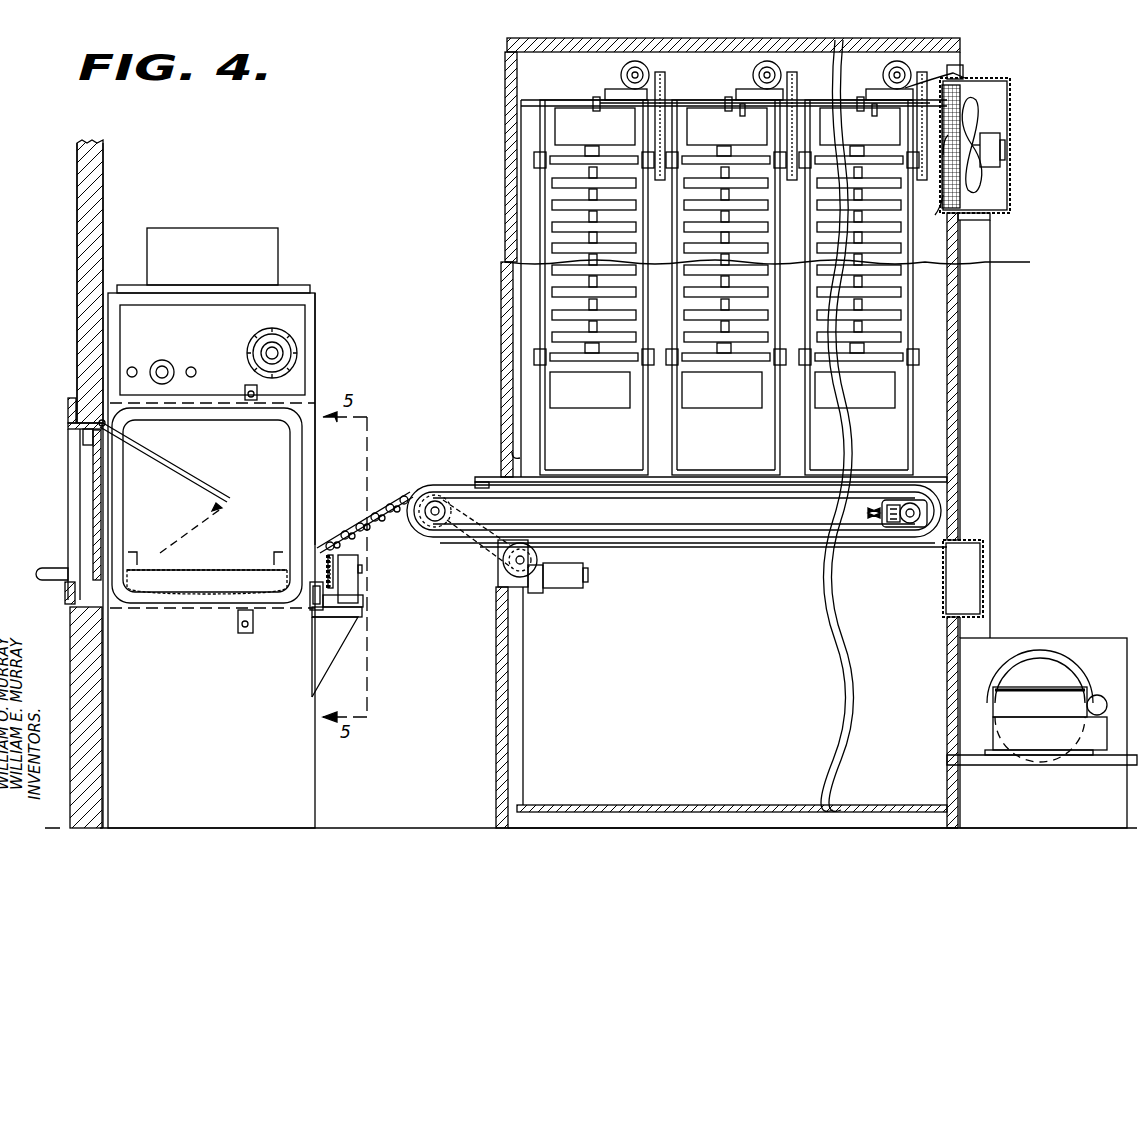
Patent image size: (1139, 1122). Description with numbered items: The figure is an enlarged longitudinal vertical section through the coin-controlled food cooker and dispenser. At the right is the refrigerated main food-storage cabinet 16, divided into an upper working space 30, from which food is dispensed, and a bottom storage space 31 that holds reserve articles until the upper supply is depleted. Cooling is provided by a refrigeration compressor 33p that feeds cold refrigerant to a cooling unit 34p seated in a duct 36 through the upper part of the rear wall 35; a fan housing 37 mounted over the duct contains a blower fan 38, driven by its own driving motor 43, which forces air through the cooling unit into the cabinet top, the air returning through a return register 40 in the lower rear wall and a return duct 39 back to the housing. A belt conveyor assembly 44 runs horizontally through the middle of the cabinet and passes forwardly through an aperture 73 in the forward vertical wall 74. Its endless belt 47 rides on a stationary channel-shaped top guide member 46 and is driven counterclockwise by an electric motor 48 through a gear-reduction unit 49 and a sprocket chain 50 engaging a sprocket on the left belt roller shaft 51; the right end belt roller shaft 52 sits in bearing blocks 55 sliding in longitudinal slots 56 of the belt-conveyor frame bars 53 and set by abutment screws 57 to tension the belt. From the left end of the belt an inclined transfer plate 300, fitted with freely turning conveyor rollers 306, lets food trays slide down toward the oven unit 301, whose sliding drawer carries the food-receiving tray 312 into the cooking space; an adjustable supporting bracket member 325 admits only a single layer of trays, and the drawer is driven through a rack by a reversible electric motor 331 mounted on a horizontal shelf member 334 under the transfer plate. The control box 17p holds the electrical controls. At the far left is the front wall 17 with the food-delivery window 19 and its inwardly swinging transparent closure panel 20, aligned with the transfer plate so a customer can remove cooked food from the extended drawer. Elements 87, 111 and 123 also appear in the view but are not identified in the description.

The main food-storage cabinet 16 is at (922, 44).
The front wall 17 is at (95, 190).
The control box 17p is at (276, 318).
The food-delivery window 19 is at (70, 410).
The transparent closure panel 20 is at (100, 501).
The upper working space 30 is at (568, 86).
The bottom storage space 31 is at (652, 661).
The refrigeration compressor 33p is at (1075, 658).
The cooling unit 34p is at (945, 195).
The rear wall 35 is at (946, 406).
The duct 36 is at (966, 63).
The fan housing 37 is at (998, 220).
The blower fan 38 is at (974, 116).
The return duct 39 is at (990, 400).
The return register 40 is at (953, 613).
The driving motor 43 is at (1000, 166).
The belt conveyor assembly 44 is at (730, 522).
The top guide member 46 is at (654, 478).
The endless belt 47 is at (452, 480).
The electric motor 48 is at (570, 586).
The gear-reduction unit 49 is at (525, 582).
The sprocket chain 50 is at (490, 563).
The belt roller shaft 51 is at (437, 519).
The right end belt roller shaft 52 is at (910, 522).
The belt-conveyor frame bars 53 is at (800, 546).
The bearing blocks 55 is at (908, 495).
The longitudinal slots 56 is at (892, 522).
The abutment screws 57 is at (869, 518).
The aperture 73 is at (514, 455).
The forward vertical wall 74 is at (507, 228).
The sprocket 87 is at (752, 74).
The drive chain 111 is at (793, 183).
The shaft 123 is at (751, 98).
The transfer plate 300 is at (403, 492).
The oven unit 301 is at (250, 528).
The conveyor rollers 306 is at (380, 506).
The food-receiving tray 312 is at (212, 576).
The supporting bracket member 325 is at (171, 553).
The electric motor 331 is at (352, 558).
The horizontal shelf member 334 is at (355, 627).